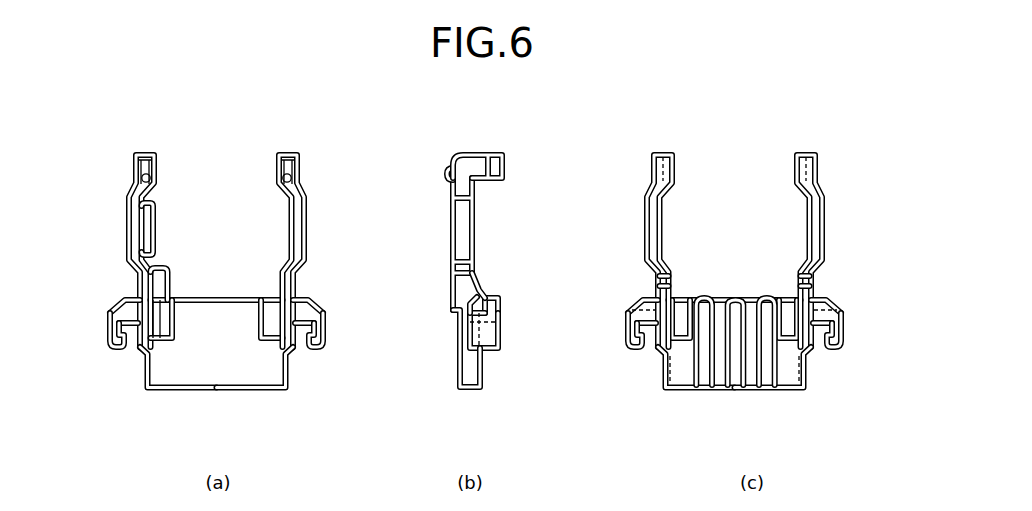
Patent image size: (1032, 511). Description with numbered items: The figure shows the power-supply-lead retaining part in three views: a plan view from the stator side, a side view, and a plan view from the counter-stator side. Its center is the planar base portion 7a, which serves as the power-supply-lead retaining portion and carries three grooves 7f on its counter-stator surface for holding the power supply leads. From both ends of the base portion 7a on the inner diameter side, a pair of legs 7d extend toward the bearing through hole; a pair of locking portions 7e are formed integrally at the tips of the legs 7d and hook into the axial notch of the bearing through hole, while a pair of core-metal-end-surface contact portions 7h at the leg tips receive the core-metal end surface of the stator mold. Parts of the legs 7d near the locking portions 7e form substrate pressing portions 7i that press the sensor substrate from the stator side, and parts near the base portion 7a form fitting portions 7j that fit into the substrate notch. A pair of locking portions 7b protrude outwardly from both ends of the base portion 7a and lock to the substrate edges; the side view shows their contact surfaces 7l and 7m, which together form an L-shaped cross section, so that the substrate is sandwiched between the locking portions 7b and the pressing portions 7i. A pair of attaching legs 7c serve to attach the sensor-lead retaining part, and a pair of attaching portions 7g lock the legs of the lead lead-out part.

The base portion 7a is at (160, 376).
The locking portions 7b is at (124, 300).
The attaching legs 7c is at (113, 328).
The legs 7d is at (131, 217).
The locking portions 7e is at (476, 160).
The grooves 7f is at (763, 378).
The attaching portions 7g is at (141, 346).
The core-metal-end-surface contact portions 7h is at (143, 178).
The substrate pressing portions 7i is at (156, 229).
The fitting portions 7j is at (170, 286).
The contact surface 7l is at (476, 307).
The contact surface 7m is at (481, 297).